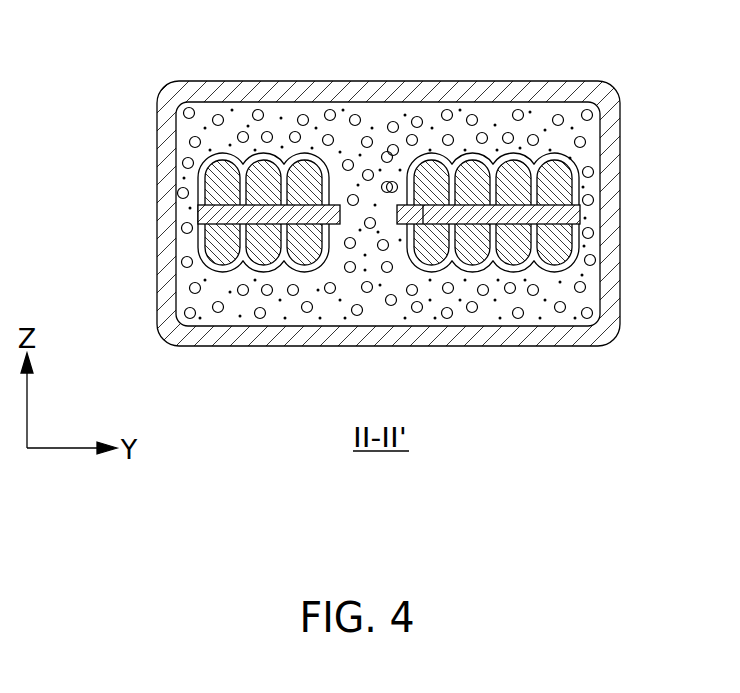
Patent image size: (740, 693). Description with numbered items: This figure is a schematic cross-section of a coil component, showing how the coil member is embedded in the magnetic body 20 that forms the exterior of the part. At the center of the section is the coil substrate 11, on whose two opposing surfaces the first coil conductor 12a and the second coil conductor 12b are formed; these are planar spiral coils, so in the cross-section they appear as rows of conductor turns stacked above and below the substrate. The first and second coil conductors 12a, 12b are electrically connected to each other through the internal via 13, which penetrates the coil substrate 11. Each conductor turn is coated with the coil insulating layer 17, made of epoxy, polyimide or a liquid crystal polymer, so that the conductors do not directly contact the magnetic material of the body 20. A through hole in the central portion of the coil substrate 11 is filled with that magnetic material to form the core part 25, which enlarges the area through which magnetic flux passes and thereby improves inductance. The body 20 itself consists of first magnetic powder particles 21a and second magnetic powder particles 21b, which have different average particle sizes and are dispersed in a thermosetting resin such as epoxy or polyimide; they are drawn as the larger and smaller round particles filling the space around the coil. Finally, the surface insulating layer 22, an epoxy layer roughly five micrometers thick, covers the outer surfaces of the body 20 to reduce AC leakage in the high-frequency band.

The coil substrate 11 is at (584, 213).
The first coil conductor 12a is at (560, 177).
The second coil conductor 12b is at (313, 262).
The internal via 13 is at (435, 215).
The coil insulating layer 17 is at (583, 249).
The body 20 is at (590, 162).
The first magnetic powder particles 21a is at (224, 102).
The second magnetic powder particles 21b is at (268, 133).
The surface insulating layer 22 is at (497, 93).
The core part 25 is at (368, 193).